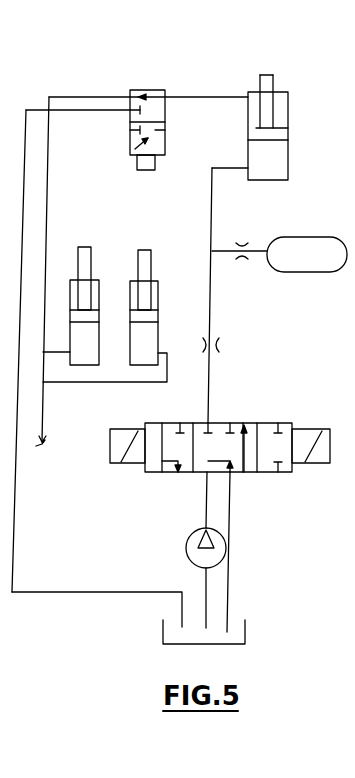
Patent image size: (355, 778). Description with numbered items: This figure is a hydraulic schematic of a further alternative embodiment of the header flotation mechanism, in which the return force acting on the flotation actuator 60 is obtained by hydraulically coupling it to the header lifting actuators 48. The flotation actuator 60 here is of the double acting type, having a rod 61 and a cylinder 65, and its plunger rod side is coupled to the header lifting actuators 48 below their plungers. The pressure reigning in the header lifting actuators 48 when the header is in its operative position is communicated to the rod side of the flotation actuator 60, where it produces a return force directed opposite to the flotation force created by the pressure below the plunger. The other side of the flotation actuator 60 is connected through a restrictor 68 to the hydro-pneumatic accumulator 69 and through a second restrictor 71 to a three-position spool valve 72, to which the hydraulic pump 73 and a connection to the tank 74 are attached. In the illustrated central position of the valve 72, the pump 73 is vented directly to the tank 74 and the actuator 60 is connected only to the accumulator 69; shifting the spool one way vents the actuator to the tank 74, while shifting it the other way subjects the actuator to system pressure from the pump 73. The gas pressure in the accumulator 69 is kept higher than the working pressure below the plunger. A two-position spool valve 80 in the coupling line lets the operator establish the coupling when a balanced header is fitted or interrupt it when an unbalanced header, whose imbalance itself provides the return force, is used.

The header lifting actuators 48 is at (130, 290).
The flotation actuator 60 is at (283, 113).
The rod 61 is at (276, 79).
The cylinder 65 is at (289, 157).
The restrictor 68 is at (248, 259).
The accumulator 69 is at (310, 245).
The restrictor 71 is at (214, 345).
The three-position spool valve 72 is at (267, 414).
The hydraulic pump 73 is at (186, 540).
The tank 74 is at (248, 622).
The two-position spool valve 80 is at (165, 91).